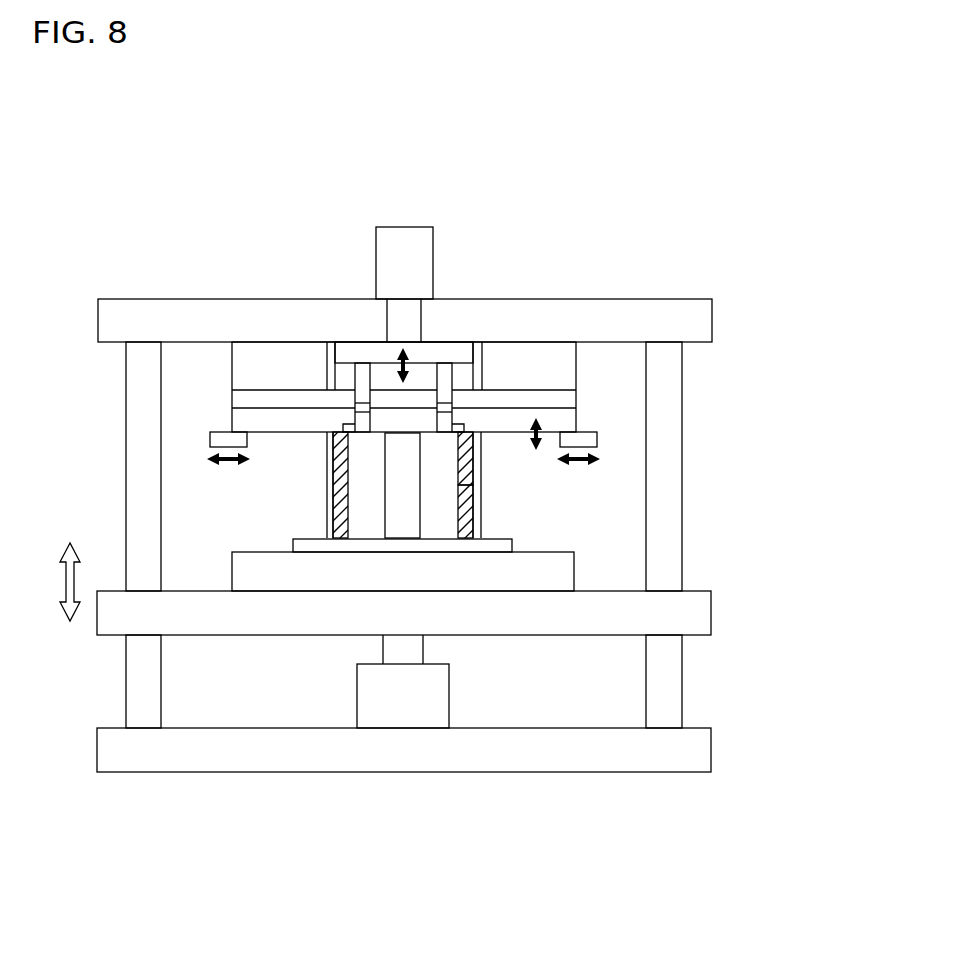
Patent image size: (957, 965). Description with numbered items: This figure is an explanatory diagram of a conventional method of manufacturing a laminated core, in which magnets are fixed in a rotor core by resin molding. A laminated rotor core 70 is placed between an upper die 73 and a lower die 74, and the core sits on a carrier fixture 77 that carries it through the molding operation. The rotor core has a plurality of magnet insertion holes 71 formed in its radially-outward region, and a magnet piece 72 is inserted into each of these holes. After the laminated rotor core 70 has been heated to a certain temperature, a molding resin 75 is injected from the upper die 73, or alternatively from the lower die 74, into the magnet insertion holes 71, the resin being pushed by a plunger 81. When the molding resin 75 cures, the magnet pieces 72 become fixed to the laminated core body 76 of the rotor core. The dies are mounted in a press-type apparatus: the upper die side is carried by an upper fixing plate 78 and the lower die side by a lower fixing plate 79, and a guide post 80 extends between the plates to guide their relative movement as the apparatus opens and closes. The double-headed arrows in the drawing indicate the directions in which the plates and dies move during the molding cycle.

The laminated rotor core 70 is at (489, 618).
The magnet insertion holes 71 is at (470, 470).
The magnet pieces 72 is at (468, 522).
The upper die 73 is at (583, 417).
The lower die 74 is at (582, 565).
The molding resin 75 is at (363, 422).
The laminated core body 76 is at (328, 517).
The carrier fixture 77 is at (444, 547).
The upper fixing plate 78 is at (717, 312).
The lower fixing plate 79 is at (725, 605).
The guide post 80 is at (143, 435).
The plunger 81 is at (362, 390).